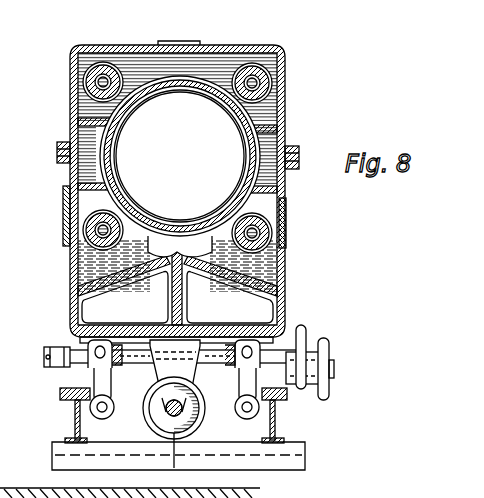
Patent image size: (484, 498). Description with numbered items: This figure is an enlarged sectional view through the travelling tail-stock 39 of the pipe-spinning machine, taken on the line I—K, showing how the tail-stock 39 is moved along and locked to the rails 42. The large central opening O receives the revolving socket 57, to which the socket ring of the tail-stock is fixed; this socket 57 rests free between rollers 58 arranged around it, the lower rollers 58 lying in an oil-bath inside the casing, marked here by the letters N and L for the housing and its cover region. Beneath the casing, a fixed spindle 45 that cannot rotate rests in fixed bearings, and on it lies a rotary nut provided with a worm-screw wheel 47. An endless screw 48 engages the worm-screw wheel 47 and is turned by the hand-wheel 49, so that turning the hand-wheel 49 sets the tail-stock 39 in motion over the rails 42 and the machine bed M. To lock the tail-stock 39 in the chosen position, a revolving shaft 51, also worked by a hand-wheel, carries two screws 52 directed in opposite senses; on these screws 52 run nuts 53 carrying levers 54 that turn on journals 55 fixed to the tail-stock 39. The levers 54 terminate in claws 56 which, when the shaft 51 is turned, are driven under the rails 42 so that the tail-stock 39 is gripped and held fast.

The travelling tail-stock 39 is at (73, 272).
The rails 42 is at (75, 408).
The fixed spindle 45 is at (170, 415).
The worm-screw wheel 47 is at (200, 420).
The endless screw 48 is at (195, 379).
The hand-wheel 49 is at (329, 345).
The revolving shaft 51 is at (131, 357).
The screw 52 is at (86, 352).
The nut 53 is at (92, 349).
The lever 54 is at (217, 360).
The journal 55 is at (102, 413).
The claw 56 is at (88, 413).
The revolving socket 57 is at (146, 214).
The roller 58 is at (104, 76).
The cover L is at (177, 67).
The housing N is at (67, 81).
The bearing opening O is at (126, 97).
The base / machine bed M is at (178, 456).